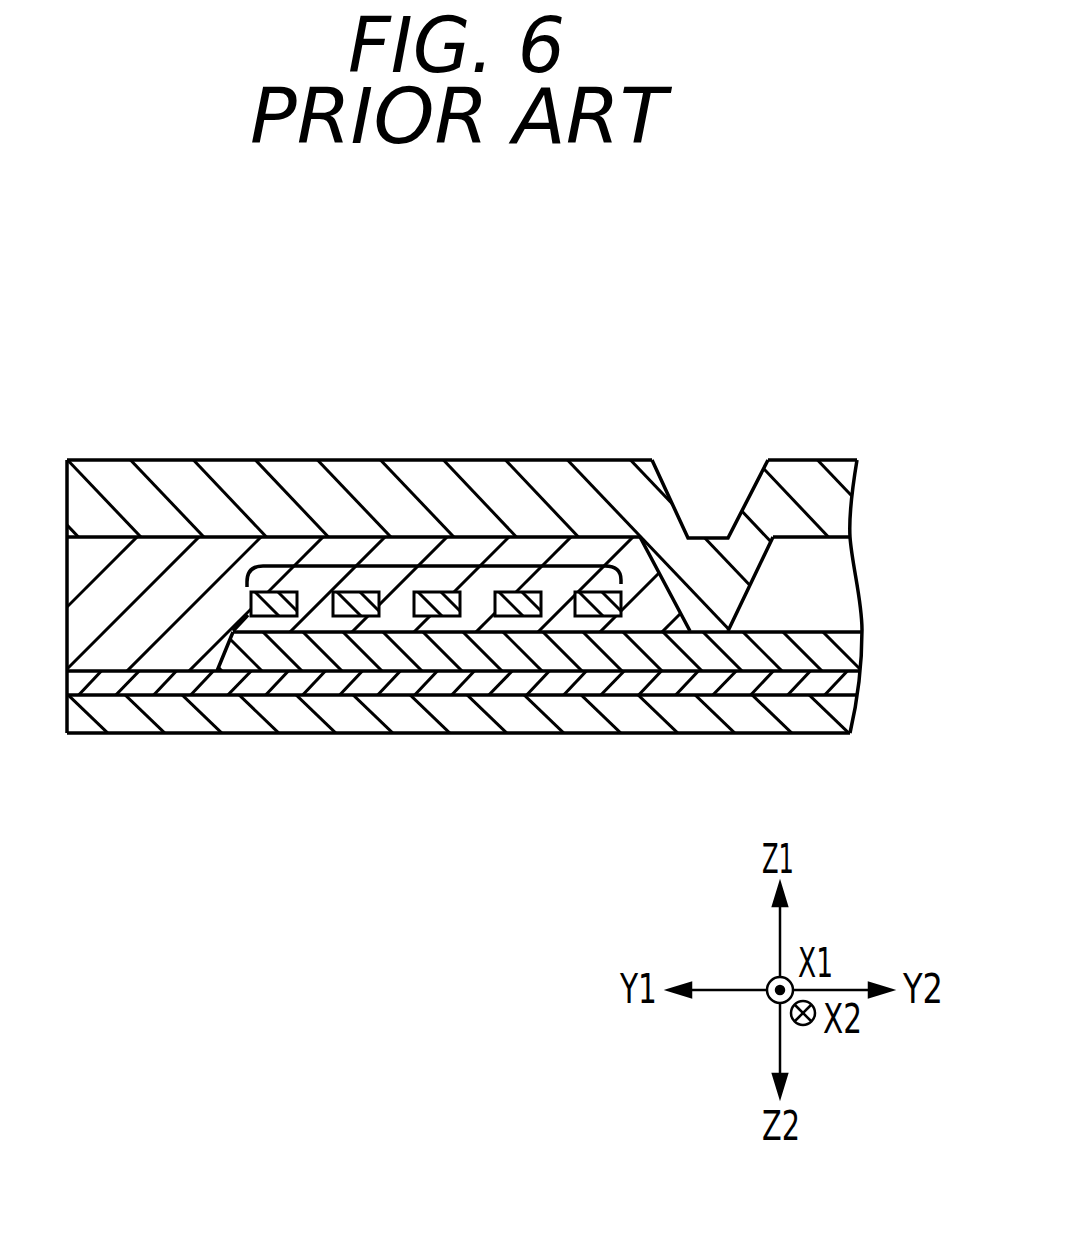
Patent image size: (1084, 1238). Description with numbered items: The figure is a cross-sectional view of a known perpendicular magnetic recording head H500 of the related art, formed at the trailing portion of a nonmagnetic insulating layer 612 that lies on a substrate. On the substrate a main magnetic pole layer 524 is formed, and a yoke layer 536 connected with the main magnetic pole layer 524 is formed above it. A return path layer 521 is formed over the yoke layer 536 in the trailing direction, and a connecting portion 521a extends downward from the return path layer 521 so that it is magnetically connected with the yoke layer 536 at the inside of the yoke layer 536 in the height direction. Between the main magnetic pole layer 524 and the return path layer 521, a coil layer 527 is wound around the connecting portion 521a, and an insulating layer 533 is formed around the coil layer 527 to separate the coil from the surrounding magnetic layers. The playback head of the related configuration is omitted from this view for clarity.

The magnetic recording head H500 is at (803, 340).
The return path layer 521 is at (246, 478).
The connecting portion 521a is at (703, 565).
The insulating layer 533 is at (152, 555).
The coil layer 527 is at (450, 565).
The yoke layer 536 is at (273, 658).
The main magnetic pole layer 524 is at (167, 683).
The nonmagnetic insulating layer 612 is at (478, 707).